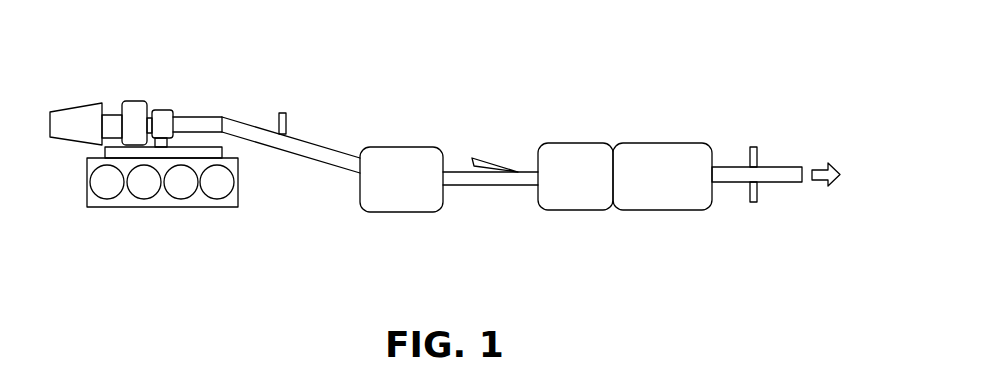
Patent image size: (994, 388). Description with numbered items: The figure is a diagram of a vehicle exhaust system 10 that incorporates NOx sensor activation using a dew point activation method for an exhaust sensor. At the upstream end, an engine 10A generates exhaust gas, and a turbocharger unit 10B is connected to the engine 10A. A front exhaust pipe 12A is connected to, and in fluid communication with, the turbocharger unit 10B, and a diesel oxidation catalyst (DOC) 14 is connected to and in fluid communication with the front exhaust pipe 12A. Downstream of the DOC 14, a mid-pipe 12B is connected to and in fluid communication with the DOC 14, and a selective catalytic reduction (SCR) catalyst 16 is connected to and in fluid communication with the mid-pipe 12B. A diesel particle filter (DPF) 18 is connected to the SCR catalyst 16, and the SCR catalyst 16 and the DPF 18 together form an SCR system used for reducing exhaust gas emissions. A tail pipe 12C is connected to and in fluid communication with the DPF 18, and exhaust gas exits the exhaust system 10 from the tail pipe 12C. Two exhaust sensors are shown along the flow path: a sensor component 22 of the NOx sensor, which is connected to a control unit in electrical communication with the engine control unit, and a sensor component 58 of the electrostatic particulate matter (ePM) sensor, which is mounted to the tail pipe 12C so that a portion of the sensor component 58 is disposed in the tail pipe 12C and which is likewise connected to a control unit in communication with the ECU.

The exhaust system 10 is at (272, 270).
The engine 10A is at (149, 215).
The turbocharger unit 10B is at (130, 84).
The front exhaust pipe 12A is at (328, 149).
The mid-pipe 12B is at (508, 186).
The tail pipe 12C is at (726, 168).
The diesel oxidation catalyst (DOC) 14 is at (396, 213).
The selective catalytic reduction (SCR) catalyst 16 is at (575, 148).
The diesel particle filter (DPF) 18 is at (662, 152).
The sensor component 22 is at (757, 157).
The sensor component 58 is at (757, 191).